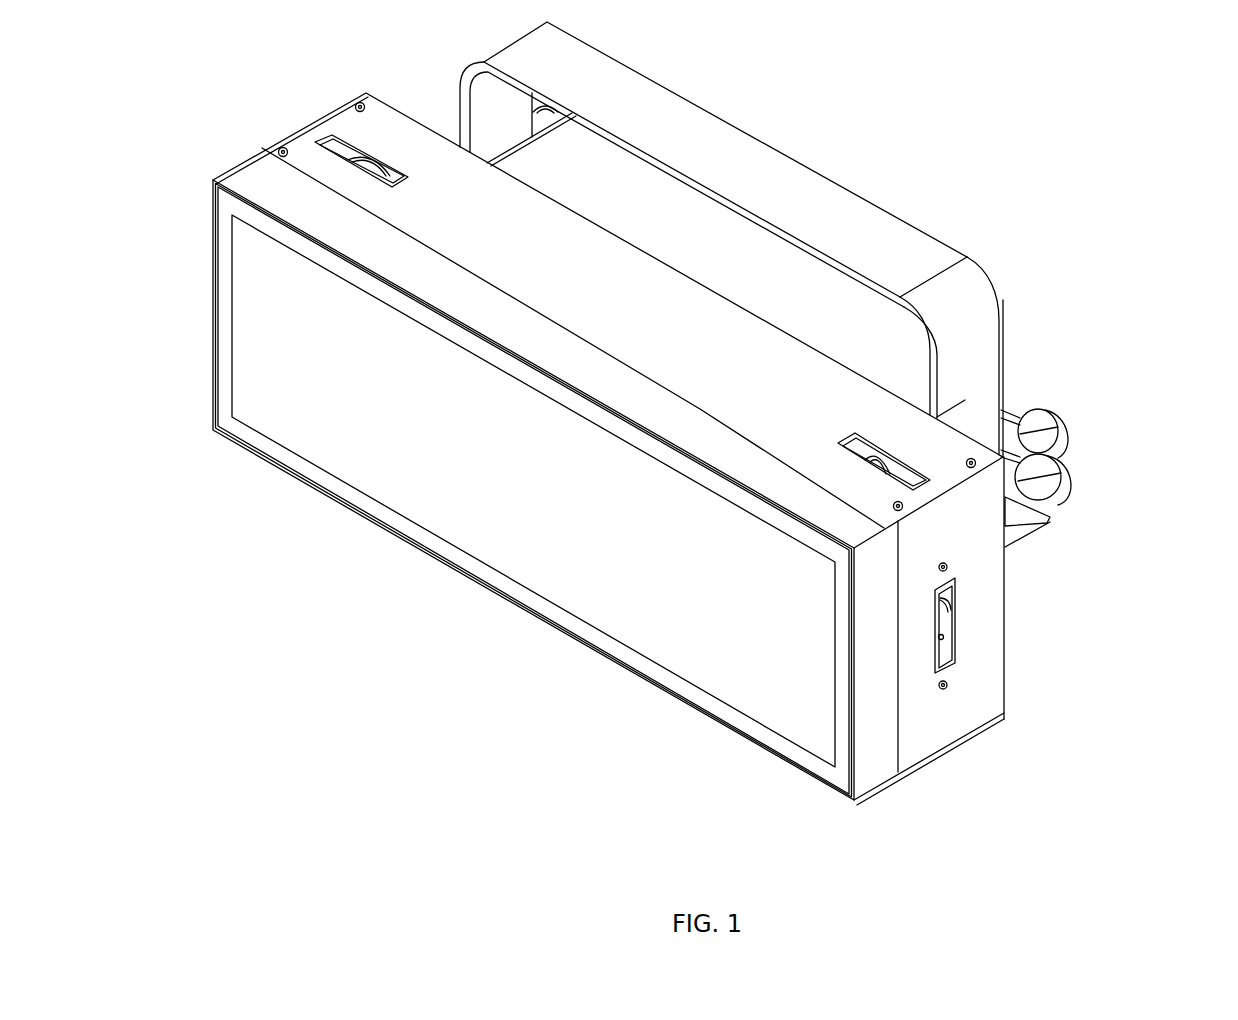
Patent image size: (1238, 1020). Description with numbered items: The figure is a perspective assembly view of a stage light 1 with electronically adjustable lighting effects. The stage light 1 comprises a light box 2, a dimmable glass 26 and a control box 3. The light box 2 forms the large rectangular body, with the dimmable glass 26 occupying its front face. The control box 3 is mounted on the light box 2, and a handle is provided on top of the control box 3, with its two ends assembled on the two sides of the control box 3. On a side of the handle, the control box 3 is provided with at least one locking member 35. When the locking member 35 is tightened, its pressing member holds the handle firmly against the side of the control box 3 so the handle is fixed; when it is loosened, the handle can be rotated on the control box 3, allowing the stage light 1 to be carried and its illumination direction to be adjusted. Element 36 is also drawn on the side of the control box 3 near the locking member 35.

The stage light 1 is at (1115, 192).
The light box 2 is at (312, 168).
The dimmable glass 26 is at (288, 333).
The control box 3 is at (890, 353).
The locking member 35 is at (533, 67).
The fastener 36 is at (1023, 527).